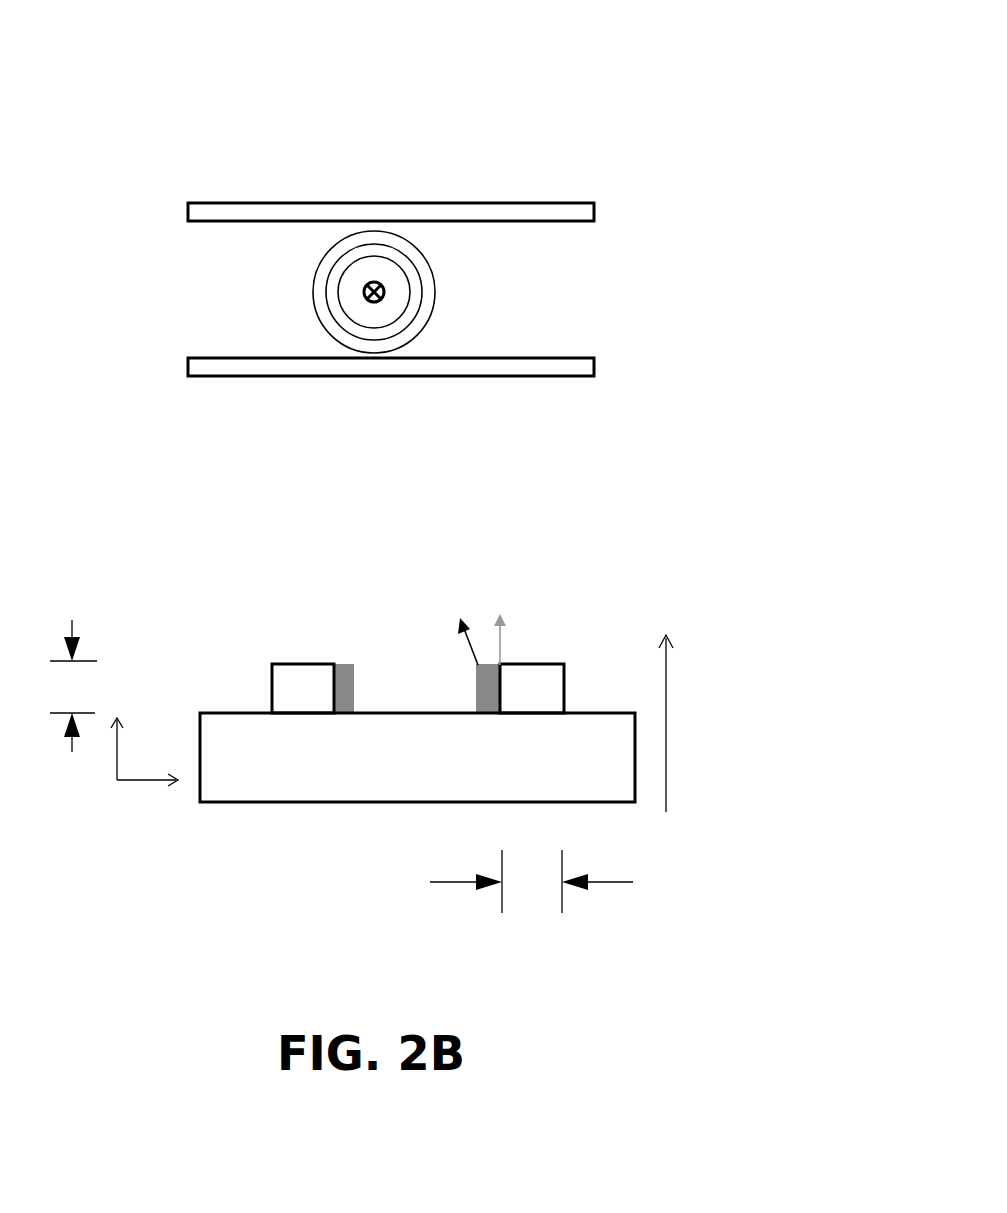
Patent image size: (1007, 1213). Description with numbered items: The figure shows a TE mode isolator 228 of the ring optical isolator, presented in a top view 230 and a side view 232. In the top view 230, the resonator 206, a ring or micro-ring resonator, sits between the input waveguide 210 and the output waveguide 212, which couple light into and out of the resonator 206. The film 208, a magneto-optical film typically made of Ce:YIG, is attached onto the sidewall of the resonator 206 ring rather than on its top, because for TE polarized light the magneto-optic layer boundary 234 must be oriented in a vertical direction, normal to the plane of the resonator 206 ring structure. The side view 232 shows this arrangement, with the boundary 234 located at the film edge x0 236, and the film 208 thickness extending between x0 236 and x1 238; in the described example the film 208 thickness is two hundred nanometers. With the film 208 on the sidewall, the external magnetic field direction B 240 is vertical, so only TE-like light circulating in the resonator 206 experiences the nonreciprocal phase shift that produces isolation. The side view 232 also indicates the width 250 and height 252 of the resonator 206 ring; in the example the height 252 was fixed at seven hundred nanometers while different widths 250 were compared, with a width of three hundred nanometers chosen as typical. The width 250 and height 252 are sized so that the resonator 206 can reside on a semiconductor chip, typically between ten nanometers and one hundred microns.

The resonator 206 is at (417, 323).
The film 208 is at (344, 259).
The input waveguide 210 is at (594, 214).
The output waveguide 212 is at (590, 367).
The TE mode isolator 228 is at (410, 123).
The top view 230 is at (268, 215).
The side view 232 is at (634, 823).
The magneto-optic layer boundary 234 is at (502, 687).
The film edge x0 236 is at (512, 600).
The x1 238 is at (450, 601).
The external magnetic field direction B 240 is at (706, 728).
The width 250 is at (531, 913).
The height 252 is at (71, 672).